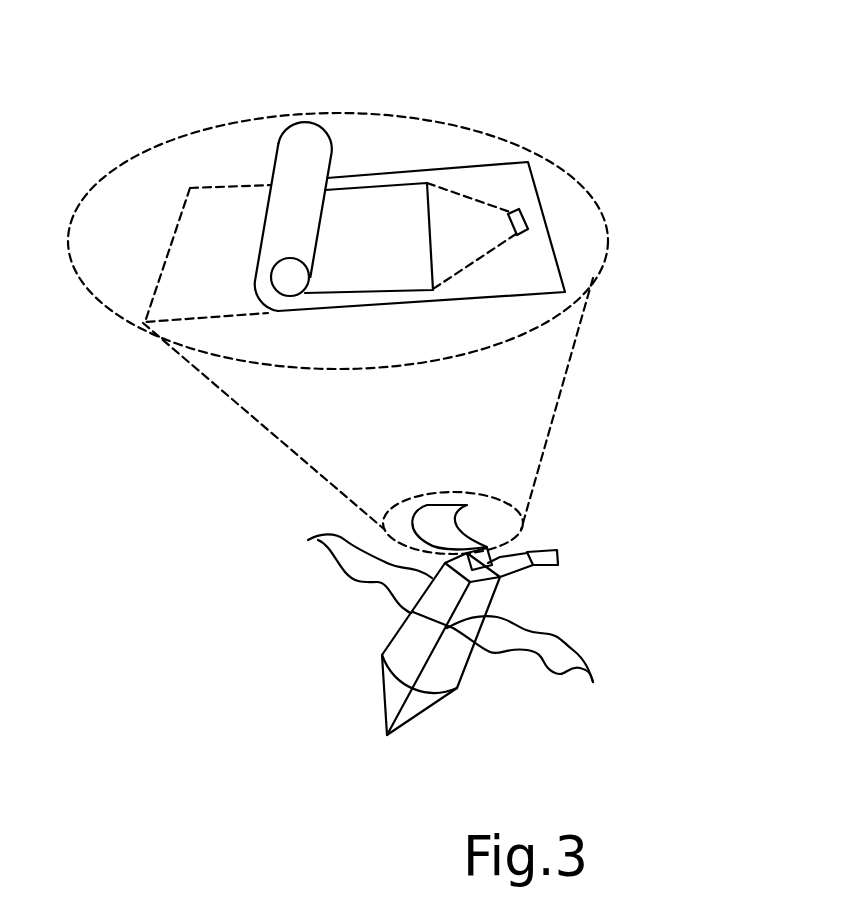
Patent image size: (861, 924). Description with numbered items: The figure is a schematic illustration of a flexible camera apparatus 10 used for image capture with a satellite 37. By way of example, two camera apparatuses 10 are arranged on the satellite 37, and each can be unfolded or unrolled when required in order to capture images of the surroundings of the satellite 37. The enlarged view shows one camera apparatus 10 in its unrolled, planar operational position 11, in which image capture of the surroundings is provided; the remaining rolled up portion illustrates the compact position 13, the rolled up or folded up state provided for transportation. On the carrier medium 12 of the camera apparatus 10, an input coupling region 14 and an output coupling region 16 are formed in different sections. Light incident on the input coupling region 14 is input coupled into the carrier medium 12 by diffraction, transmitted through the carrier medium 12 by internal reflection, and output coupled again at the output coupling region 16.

The camera apparatus 10 is at (154, 116).
The operational position 11 is at (191, 337).
The carrier medium 12 is at (478, 162).
The compact position 13 is at (303, 108).
The input coupling region 14 is at (362, 177).
The output coupling region 16 is at (527, 222).
The satellite 37 is at (457, 688).